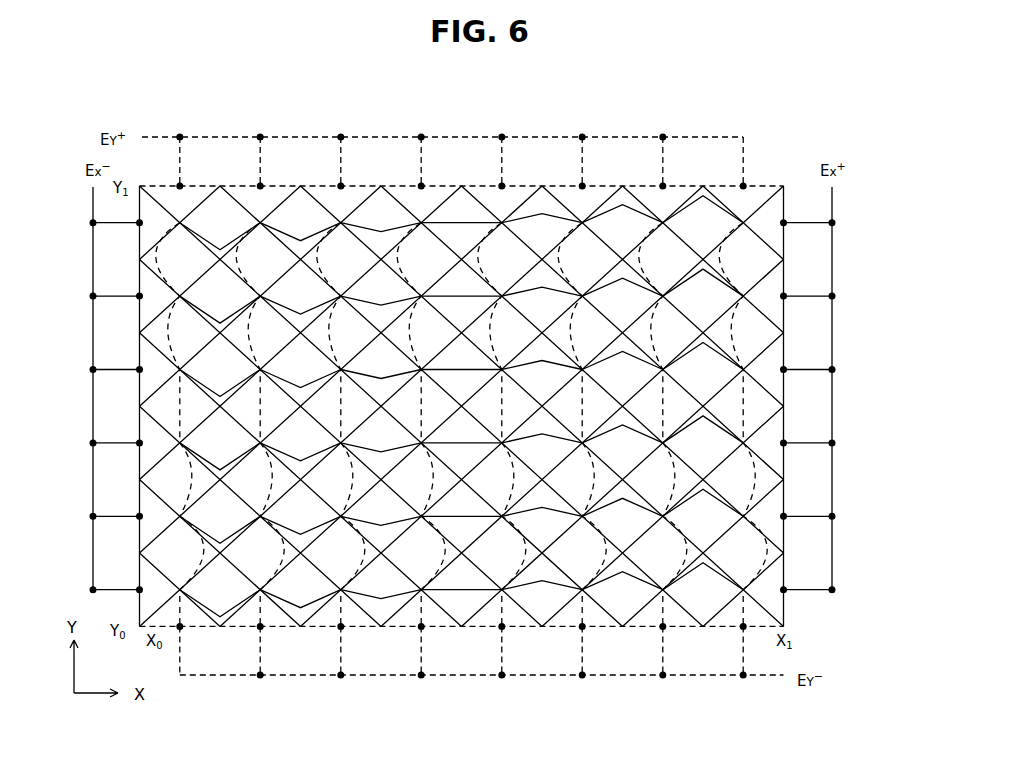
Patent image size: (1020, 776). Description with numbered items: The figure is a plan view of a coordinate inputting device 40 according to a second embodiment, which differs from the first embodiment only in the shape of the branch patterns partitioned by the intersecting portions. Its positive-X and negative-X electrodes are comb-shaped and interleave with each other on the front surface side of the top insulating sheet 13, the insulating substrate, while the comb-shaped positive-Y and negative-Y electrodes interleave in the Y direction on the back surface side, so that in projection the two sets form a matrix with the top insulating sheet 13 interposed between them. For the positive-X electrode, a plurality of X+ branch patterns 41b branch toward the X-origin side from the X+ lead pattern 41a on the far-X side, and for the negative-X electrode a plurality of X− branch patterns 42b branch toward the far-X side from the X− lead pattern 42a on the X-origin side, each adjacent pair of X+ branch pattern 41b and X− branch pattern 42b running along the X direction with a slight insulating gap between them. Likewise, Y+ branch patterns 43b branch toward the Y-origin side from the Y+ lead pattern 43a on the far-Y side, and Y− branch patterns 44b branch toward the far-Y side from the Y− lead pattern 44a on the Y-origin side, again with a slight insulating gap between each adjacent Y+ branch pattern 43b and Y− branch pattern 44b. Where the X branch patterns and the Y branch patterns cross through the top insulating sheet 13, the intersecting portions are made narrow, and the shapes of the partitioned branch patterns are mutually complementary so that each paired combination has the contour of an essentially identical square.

The top insulating sheet 13 is at (445, 167).
The coordinate inputting device 40 is at (780, 133).
The X+ lead pattern 41a is at (833, 248).
The X+ branch pattern 41b is at (393, 237).
The X− lead pattern 42a is at (94, 258).
The X− branch pattern 42b is at (370, 208).
The Y+ lead pattern 43a is at (535, 131).
The Y+ branch pattern 43b is at (600, 245).
The Y− lead pattern 44a is at (437, 677).
The Y− branch pattern 44b is at (312, 568).